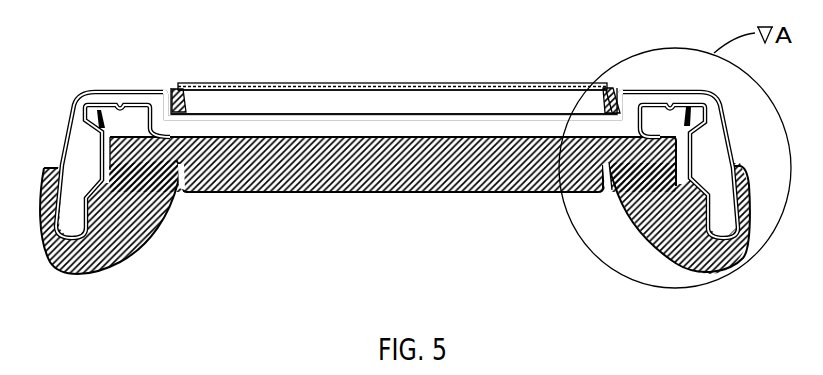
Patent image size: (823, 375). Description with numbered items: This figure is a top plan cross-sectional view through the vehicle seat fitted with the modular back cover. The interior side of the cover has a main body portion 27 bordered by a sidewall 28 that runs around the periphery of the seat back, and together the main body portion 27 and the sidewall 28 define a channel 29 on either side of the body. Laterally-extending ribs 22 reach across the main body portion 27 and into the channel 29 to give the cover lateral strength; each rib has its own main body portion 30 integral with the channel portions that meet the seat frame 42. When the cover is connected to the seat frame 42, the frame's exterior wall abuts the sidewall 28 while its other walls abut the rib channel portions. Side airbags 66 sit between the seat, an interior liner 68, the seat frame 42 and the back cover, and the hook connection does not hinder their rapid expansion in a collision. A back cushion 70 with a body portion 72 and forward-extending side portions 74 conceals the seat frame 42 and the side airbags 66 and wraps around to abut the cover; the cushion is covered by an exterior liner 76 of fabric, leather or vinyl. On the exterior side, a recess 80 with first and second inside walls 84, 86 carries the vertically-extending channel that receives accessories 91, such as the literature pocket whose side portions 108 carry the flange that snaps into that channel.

The laterally-extending ribs 22 is at (258, 114).
The main body portion 27 is at (235, 122).
The sidewall 28 is at (67, 131).
The channel 29 is at (135, 103).
The main body portion of rib 30 is at (338, 130).
The seat frame 42 is at (100, 112).
The side airbags 66 is at (80, 158).
The interior liner 68 is at (662, 145).
The back cushion 70 is at (662, 222).
The body portion 72 is at (425, 192).
The side portions 74 is at (697, 270).
The exterior liner 76 is at (620, 186).
The recess 80 is at (400, 84).
The first inside wall 84 is at (190, 110).
The second inside wall 86 is at (613, 110).
The accessories 91 is at (493, 66).
The side portions 108 is at (607, 110).